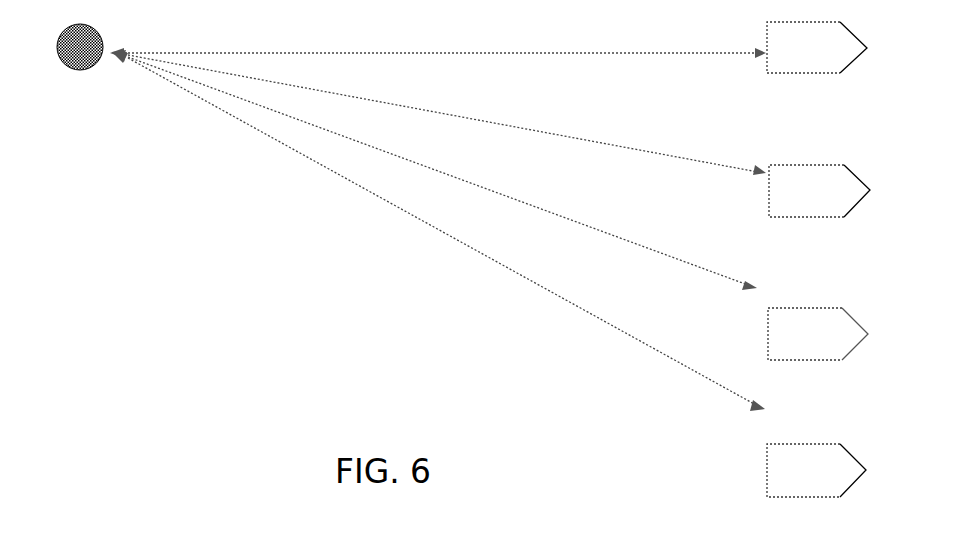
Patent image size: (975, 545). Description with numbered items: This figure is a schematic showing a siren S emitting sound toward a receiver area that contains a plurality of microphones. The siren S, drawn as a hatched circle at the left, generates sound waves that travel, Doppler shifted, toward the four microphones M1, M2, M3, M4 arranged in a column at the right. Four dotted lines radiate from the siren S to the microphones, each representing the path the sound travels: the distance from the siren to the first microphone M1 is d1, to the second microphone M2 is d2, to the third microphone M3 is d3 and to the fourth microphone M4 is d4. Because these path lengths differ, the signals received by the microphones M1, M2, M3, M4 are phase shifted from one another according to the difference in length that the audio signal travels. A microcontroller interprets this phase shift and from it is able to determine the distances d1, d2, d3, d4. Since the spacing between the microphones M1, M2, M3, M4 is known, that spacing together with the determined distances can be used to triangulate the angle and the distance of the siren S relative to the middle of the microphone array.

The siren S is at (59, 47).
The distance to microphone M1 d1 is at (438, 45).
The distance to microphone M2 d2 is at (439, 112).
The distance to microphone M3 d3 is at (434, 171).
The distance to microphone M4 d4 is at (438, 231).
The microphone M1 is at (850, 47).
The microphone M2 is at (851, 182).
The microphone M3 is at (851, 313).
The microphone M4 is at (850, 440).